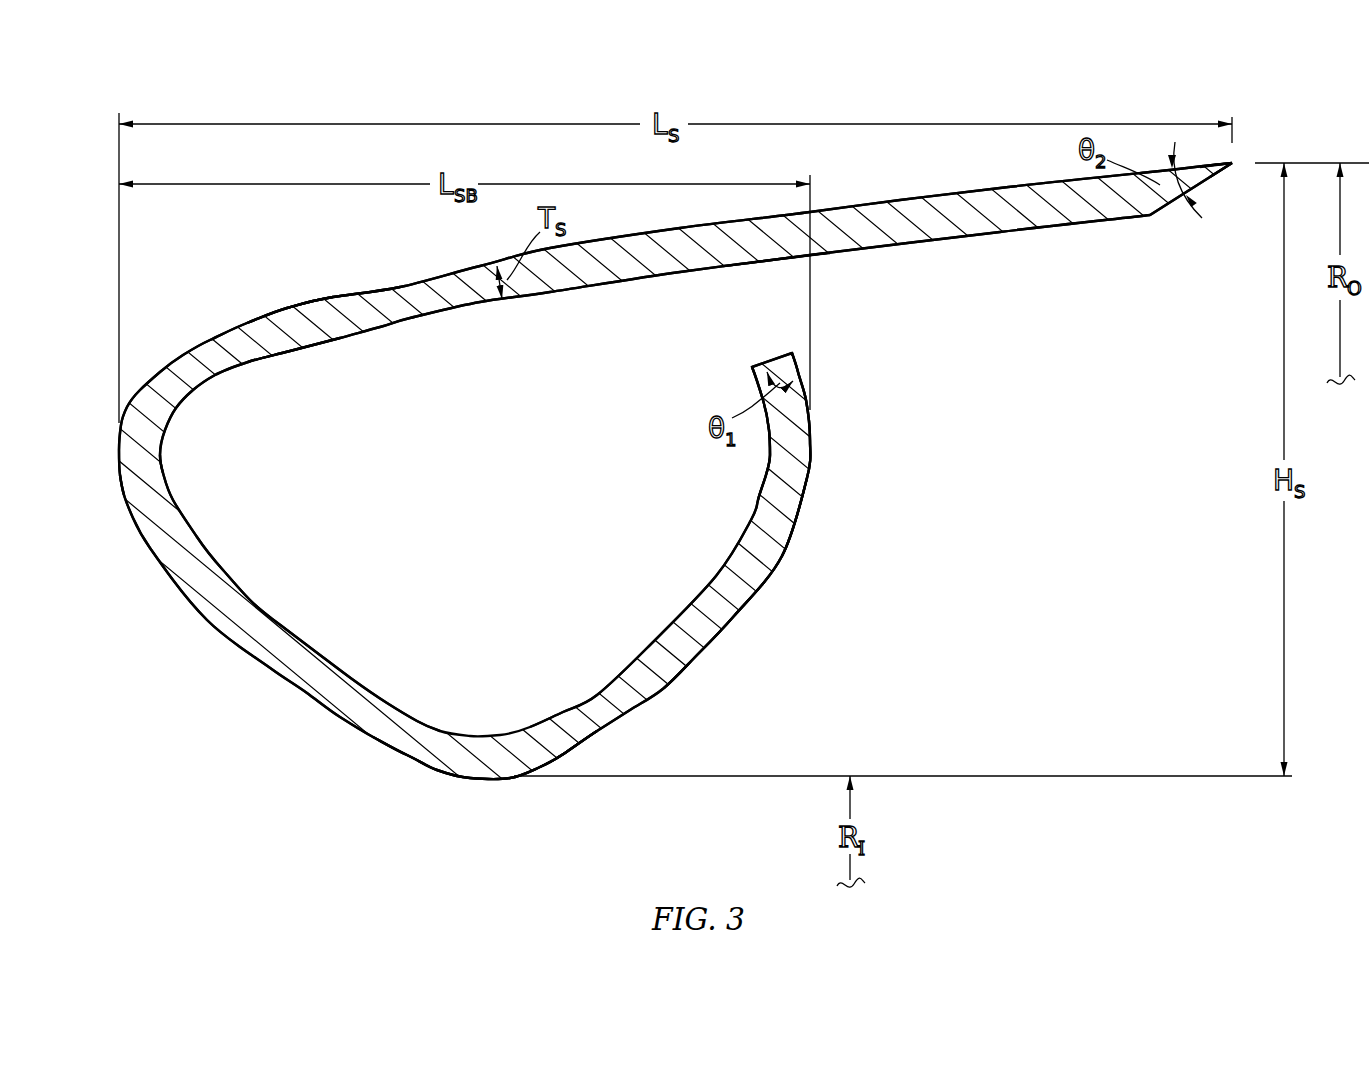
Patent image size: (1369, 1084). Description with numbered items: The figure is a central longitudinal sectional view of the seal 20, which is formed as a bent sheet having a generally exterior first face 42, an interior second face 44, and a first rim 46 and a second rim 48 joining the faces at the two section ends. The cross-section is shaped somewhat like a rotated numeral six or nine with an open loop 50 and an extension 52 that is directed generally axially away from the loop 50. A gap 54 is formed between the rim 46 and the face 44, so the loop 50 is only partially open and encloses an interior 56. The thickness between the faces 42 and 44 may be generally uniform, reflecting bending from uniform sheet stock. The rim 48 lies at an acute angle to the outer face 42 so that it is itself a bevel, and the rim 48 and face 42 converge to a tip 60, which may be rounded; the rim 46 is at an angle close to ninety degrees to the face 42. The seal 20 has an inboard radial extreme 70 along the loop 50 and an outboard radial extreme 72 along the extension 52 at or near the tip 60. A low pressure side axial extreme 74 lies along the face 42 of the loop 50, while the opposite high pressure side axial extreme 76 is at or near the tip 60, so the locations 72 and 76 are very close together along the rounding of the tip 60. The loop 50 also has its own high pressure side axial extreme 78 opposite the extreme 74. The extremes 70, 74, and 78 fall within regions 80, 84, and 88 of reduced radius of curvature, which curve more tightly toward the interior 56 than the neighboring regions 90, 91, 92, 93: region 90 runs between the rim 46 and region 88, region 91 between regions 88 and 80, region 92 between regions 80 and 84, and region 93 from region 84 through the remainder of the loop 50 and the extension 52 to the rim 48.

The seal 20 is at (967, 645).
The first face 42 is at (314, 302).
The second face 44 is at (320, 344).
The first rim 46 is at (763, 366).
The second rim 48 is at (1198, 186).
The loop 50 is at (709, 670).
The extension 52 is at (967, 258).
The gap 54 is at (760, 322).
The interior 56 is at (483, 510).
The tip 60 is at (1236, 161).
The inboard radial extreme 70 is at (481, 779).
The outboard radial extreme 72 is at (1234, 160).
The low pressure side axial extreme 74 is at (118, 455).
The high pressure side axial extreme 76 is at (1245, 163).
The loop axial extreme 78 is at (813, 456).
The region of reduced radius of curvature 80 is at (490, 774).
The region of reduced radius of curvature 84 is at (161, 466).
The region of reduced radius of curvature 88 is at (808, 465).
The region 90 is at (772, 416).
The region 91 is at (723, 603).
The region 92 is at (275, 658).
The region 93 is at (360, 322).